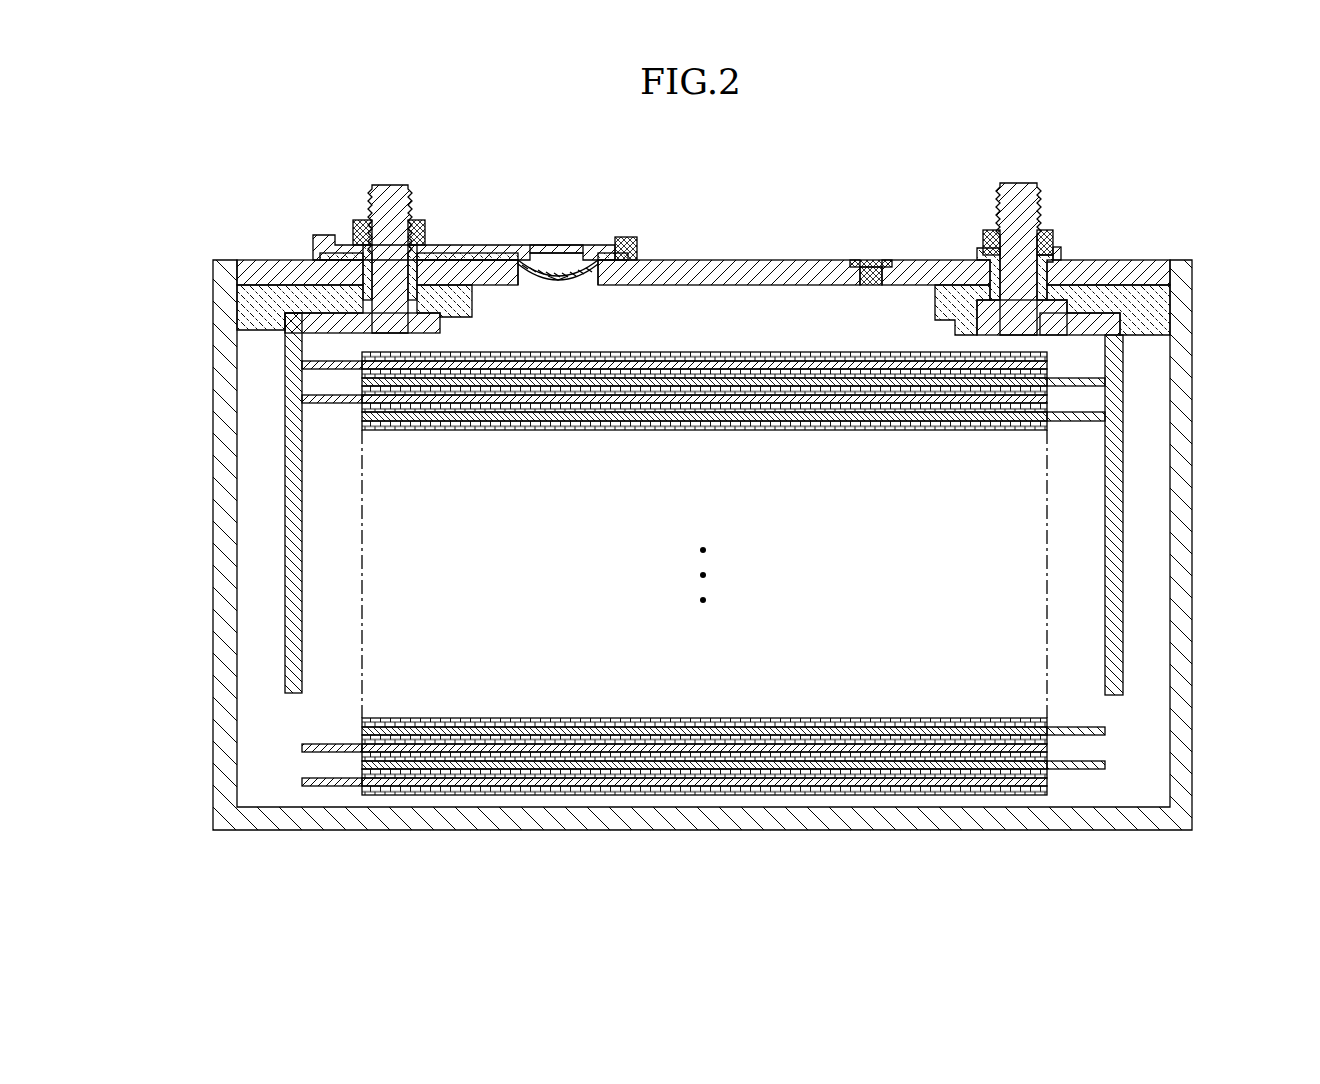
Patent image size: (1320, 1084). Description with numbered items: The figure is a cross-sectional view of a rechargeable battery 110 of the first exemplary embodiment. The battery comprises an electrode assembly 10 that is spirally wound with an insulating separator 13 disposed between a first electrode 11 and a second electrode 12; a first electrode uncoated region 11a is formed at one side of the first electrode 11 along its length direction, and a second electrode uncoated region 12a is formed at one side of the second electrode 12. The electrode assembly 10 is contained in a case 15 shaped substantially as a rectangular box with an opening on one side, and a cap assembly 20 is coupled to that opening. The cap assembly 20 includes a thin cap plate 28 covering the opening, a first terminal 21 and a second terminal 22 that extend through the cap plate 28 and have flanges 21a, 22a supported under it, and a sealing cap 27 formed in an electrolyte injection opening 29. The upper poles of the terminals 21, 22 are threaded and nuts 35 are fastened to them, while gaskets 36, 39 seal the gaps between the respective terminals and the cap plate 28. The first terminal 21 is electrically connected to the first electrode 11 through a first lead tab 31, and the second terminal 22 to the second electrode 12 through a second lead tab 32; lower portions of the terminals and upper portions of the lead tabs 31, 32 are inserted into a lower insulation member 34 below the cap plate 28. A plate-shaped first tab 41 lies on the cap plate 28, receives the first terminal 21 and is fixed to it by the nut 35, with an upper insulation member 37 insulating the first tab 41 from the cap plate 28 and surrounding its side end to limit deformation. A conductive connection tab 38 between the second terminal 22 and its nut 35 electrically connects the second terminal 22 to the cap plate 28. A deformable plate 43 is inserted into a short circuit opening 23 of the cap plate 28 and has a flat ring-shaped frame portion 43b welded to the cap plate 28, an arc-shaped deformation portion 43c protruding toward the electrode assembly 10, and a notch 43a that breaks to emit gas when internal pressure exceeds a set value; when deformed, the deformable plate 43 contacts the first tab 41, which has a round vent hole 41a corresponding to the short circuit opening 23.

The rechargeable battery 110 is at (806, 165).
The electrode assembly 10 is at (703, 619).
The first electrode 11 is at (446, 783).
The first electrode uncoated region 11a is at (318, 787).
The second electrode 12 is at (930, 781).
The second electrode uncoated region 12a is at (1070, 766).
The separator 13 is at (665, 757).
The case 15 is at (1186, 525).
The cap assembly 20 is at (703, 230).
The first terminal 21 is at (386, 185).
The flange 21a is at (348, 300).
The second terminal 22 is at (1016, 187).
The flange 22a is at (1062, 303).
The short circuit opening 23 is at (581, 284).
The sealing cap 27 is at (871, 266).
The cap plate 28 is at (778, 270).
The electrolyte injection opening 29 is at (866, 286).
The first lead tab 31 is at (292, 550).
The second lead tab 32 is at (1116, 630).
The lower insulation member 34 is at (262, 320).
The nut 35 is at (414, 222).
The gasket 36 is at (363, 280).
The upper insulation member 37 is at (628, 240).
The connection tab 38 is at (1058, 248).
The gasket 39 is at (972, 278).
The first tab 41 is at (464, 213).
The vent hole 41a is at (578, 247).
The deformable plate 43 is at (598, 240).
The notch 43a is at (553, 270).
The frame portion 43b is at (627, 277).
The deformation portion 43c is at (550, 283).